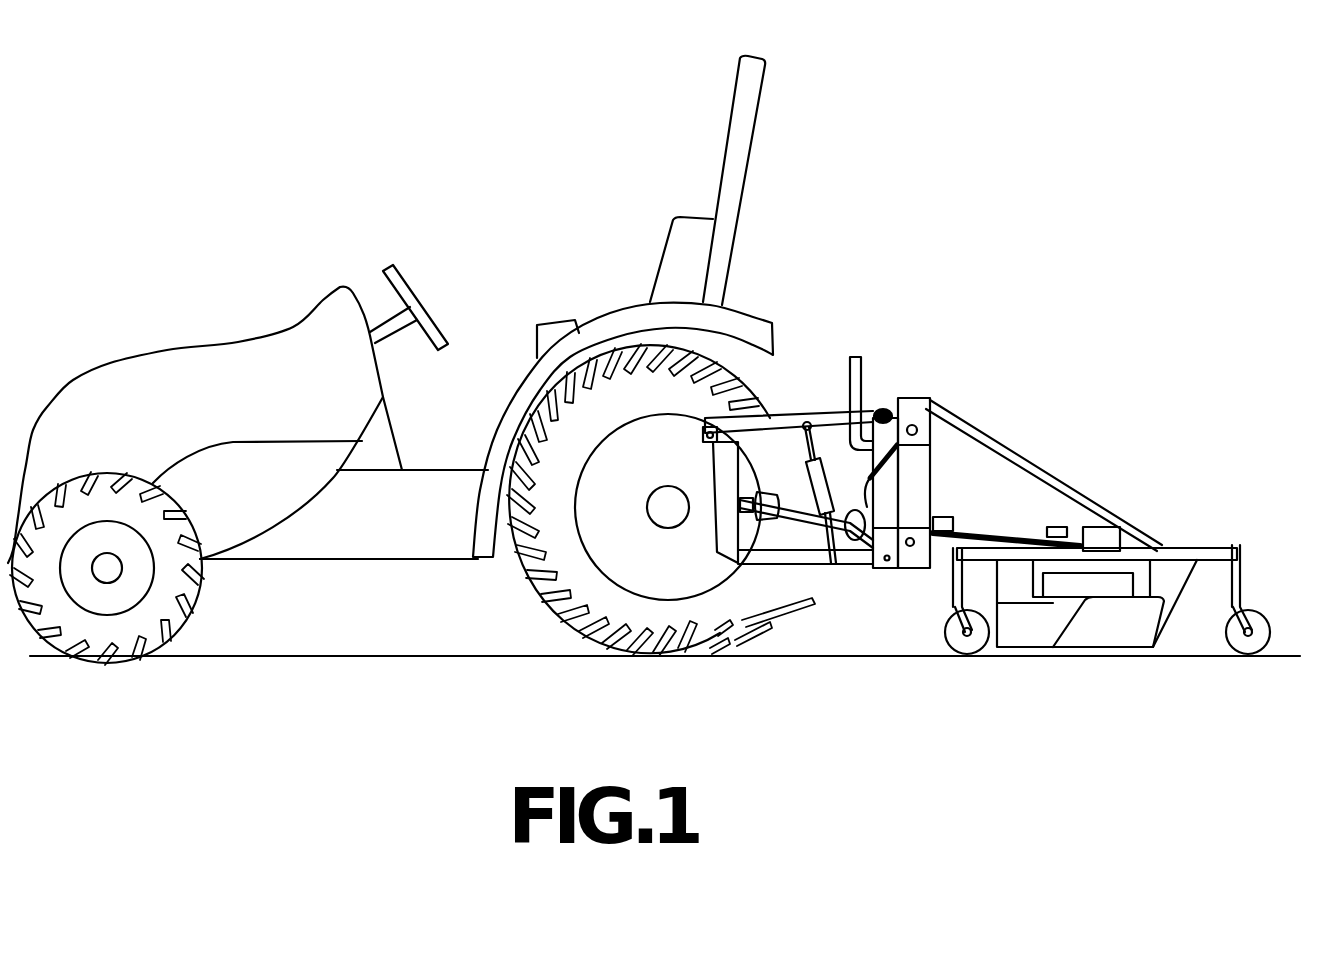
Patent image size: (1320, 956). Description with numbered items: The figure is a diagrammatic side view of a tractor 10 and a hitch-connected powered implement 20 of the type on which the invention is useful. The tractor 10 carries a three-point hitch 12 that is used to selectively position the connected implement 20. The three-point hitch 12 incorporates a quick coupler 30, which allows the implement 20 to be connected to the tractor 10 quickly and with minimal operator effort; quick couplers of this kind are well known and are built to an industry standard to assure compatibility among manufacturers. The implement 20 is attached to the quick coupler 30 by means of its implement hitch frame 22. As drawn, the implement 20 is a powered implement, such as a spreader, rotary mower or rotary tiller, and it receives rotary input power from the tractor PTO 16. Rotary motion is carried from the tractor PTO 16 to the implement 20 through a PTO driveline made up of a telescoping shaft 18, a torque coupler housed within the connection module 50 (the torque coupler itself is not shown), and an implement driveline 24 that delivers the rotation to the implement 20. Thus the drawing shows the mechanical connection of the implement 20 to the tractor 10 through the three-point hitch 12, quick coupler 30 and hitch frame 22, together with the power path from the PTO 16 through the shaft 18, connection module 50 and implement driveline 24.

The tractor 10 is at (292, 263).
The three-point hitch 12 is at (808, 338).
The tractor PTO 16 is at (710, 417).
The telescoping shaft 18 is at (810, 527).
The implement 20 is at (1197, 510).
The implement hitch frame 22 is at (930, 404).
The implement driveline 24 is at (1020, 530).
The quick coupler 30 is at (887, 485).
The connection module 50 is at (863, 540).